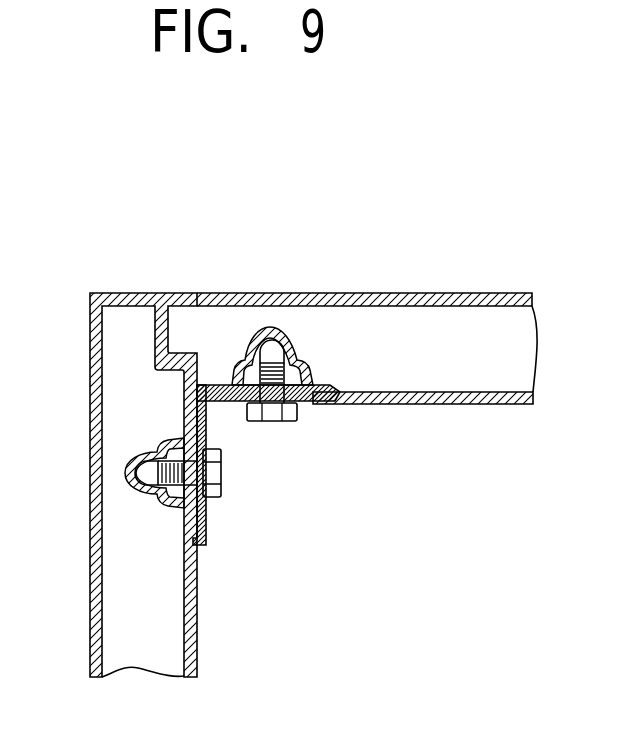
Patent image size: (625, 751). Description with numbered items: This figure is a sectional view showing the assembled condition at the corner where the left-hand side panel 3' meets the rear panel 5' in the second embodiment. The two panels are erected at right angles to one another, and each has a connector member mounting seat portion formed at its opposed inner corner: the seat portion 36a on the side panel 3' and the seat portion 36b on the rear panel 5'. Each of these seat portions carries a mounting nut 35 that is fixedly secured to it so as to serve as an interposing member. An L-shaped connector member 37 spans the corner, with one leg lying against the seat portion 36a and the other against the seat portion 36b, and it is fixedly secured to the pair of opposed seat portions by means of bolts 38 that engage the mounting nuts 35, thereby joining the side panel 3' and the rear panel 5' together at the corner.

The left-hand side panel 3' is at (119, 485).
The rear panel 5' is at (367, 318).
The mounting nut 35 is at (300, 380).
The connector member mounting seat portion 36a is at (178, 526).
The connector member mounting seat portion 36b is at (340, 386).
The L-shaped connector member 37 is at (313, 407).
The bolt 38 is at (268, 423).